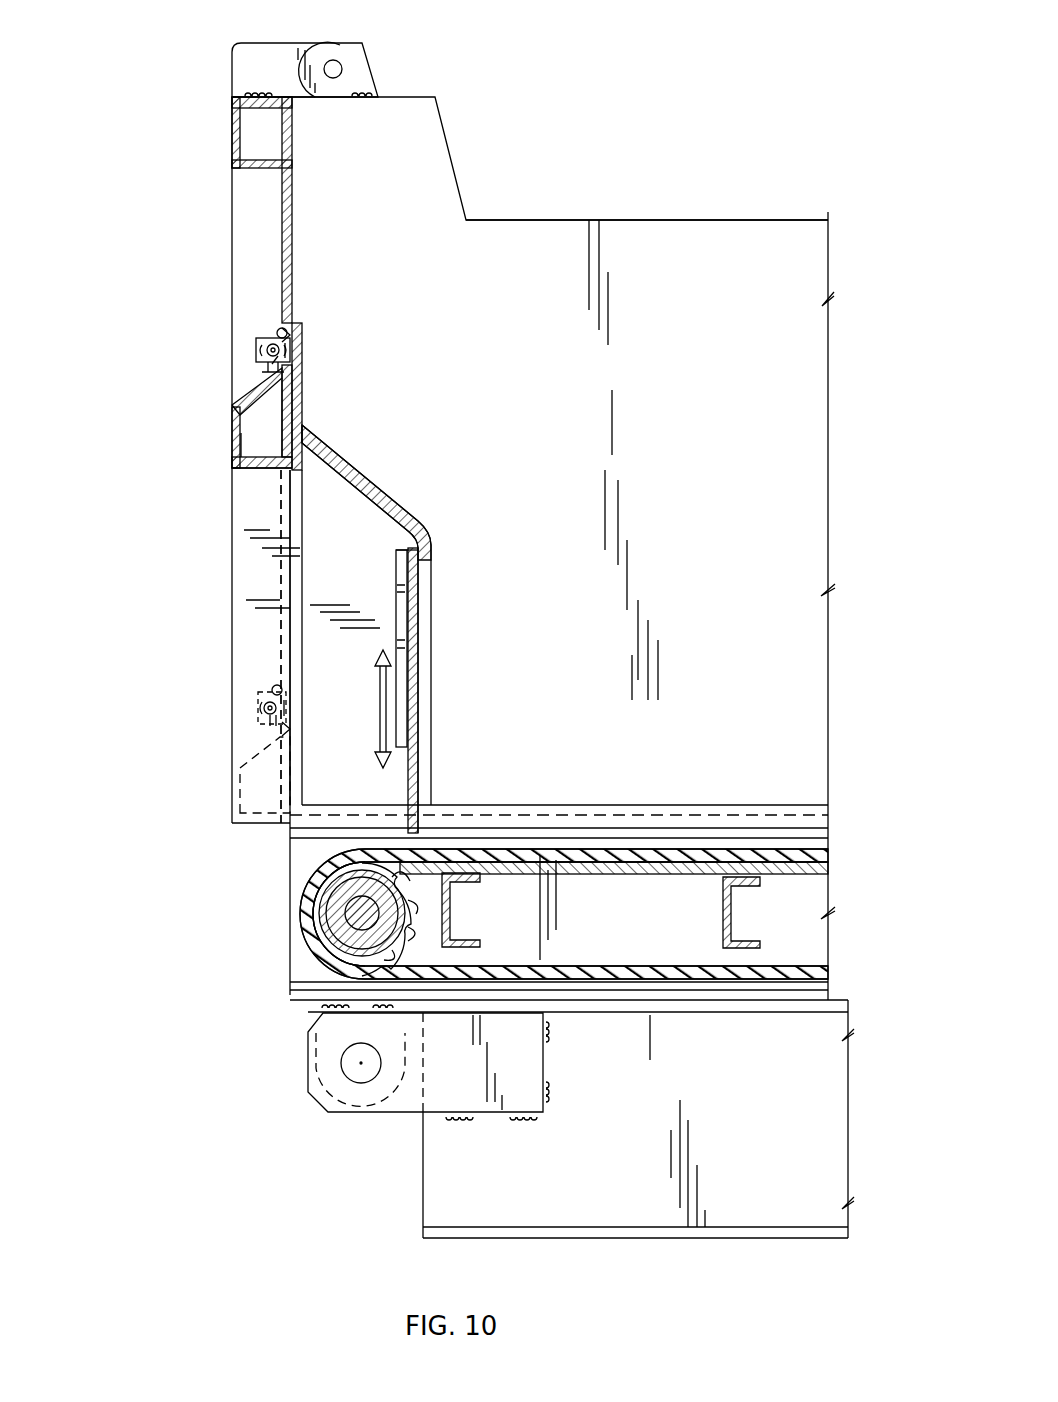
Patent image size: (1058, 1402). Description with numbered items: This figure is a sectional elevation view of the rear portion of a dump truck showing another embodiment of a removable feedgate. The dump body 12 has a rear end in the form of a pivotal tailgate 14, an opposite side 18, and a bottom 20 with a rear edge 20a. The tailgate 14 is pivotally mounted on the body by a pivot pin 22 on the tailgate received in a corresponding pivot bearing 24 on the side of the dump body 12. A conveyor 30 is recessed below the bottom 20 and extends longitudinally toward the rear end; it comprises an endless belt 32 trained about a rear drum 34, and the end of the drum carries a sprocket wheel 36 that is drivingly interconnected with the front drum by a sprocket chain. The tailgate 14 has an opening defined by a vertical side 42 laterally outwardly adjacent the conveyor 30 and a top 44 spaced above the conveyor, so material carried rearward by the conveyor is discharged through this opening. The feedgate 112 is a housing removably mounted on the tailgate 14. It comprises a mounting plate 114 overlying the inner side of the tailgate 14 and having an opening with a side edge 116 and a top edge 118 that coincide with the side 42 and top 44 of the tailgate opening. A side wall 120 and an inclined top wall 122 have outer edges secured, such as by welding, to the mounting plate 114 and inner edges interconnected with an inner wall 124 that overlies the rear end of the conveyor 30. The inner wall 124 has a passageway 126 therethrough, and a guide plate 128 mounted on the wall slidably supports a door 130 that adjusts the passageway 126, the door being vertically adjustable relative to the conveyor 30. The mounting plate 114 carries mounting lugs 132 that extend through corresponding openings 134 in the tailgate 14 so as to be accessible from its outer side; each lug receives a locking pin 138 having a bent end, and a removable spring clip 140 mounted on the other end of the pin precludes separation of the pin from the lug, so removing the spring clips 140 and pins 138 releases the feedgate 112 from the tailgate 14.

The dump body 12 is at (700, 150).
The tailgate 14 is at (230, 204).
The side 18 is at (616, 222).
The bottom 20 is at (705, 805).
The rear edge 20a is at (290, 818).
The pivot pin 22 is at (342, 69).
The pivot bearing 24 is at (363, 47).
The conveyor 30 is at (298, 952).
The endless belt 32 is at (318, 928).
The rear drum 34 is at (340, 960).
The sprocket wheel 36 is at (425, 912).
The vertical side 42 is at (248, 620).
The top 44 is at (300, 464).
The feedgate 112 is at (453, 613).
The mounting plate 114 is at (300, 385).
The side edge 116 is at (297, 652).
The top edge 118 is at (283, 473).
The side wall 120 is at (330, 560).
The inclined top wall 122 is at (345, 468).
The inner wall 124 is at (427, 568).
The passageway 126 is at (430, 766).
The guide plate 128 is at (398, 546).
The door 130 is at (420, 718).
The mounting lug 132 is at (258, 345).
The opening 134 is at (291, 333).
The locking pin 138 is at (268, 358).
The spring clip 140 is at (268, 335).